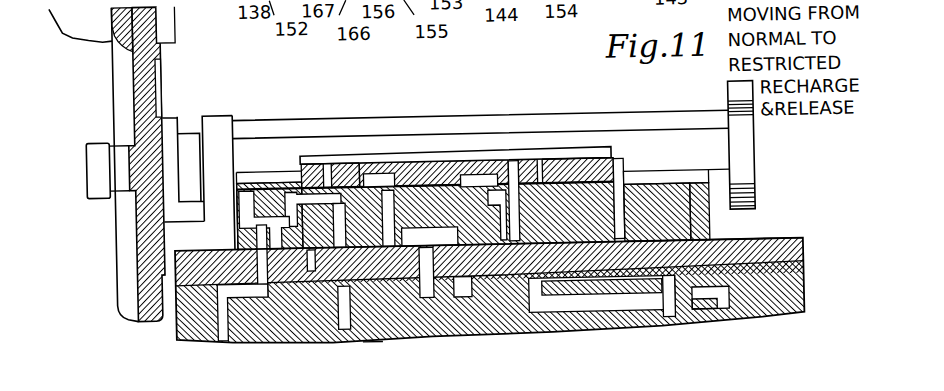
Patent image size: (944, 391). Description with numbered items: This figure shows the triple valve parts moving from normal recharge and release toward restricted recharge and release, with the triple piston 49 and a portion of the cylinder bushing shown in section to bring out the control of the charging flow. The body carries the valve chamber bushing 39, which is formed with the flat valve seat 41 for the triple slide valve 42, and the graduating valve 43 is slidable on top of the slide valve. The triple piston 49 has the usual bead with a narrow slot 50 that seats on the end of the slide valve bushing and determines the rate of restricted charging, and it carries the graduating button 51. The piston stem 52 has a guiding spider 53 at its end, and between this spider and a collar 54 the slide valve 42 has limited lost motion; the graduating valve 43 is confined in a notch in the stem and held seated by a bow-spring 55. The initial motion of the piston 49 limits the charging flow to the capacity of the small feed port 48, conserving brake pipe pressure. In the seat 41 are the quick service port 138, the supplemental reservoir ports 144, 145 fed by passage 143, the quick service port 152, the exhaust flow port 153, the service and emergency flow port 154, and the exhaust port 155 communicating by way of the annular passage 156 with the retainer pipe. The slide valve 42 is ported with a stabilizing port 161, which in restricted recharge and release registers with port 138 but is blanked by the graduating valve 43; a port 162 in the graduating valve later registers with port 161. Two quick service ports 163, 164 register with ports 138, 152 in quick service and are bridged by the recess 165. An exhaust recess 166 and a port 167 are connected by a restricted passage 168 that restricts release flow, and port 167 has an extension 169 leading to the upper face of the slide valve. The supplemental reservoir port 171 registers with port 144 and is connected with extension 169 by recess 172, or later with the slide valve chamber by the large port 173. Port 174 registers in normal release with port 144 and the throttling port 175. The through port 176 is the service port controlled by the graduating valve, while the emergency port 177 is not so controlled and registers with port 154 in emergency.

The valve chamber bushing 39 is at (798, 250).
The flat valve seat 41 is at (757, 244).
The triple slide valve 42 is at (709, 190).
The graduating valve 43 is at (593, 168).
The feed port 48 is at (181, 24).
The triple piston 49 is at (117, 221).
The narrow slot 50 is at (164, 62).
The graduating button 51 is at (88, 139).
The piston stem 52 is at (262, 126).
The guiding spider 53 is at (730, 92).
The collar 54 is at (220, 110).
The bow-spring 55 is at (320, 157).
The quick service port 138 is at (266, 290).
The passage 143 is at (736, 320).
The supplemental reservoir port 144 is at (522, 322).
The supplemental reservoir port 145 is at (661, 288).
The quick service port 152 is at (288, 276).
The exhaust flow port 153 is at (431, 340).
The service and emergency flow port 154 is at (595, 320).
The exhaust port 155 is at (370, 340).
The annular passage 156 is at (366, 278).
The stabilizing port 161 is at (269, 204).
The graduating valve port 162 is at (301, 161).
The quick service port 163 is at (238, 232).
The quick service port 164 is at (350, 160).
The recess 165 is at (371, 160).
The exhaust recess 166 is at (413, 280).
The port 167 is at (394, 168).
The restricted passage 168 is at (441, 162).
The extension 169 is at (463, 170).
The supplemental reservoir port 171 is at (543, 158).
The recess 172 is at (501, 165).
The port 173 is at (513, 160).
The port 174 is at (618, 177).
The throttling port 175 is at (558, 151).
The through port 176 is at (632, 204).
The emergency port 177 is at (650, 207).